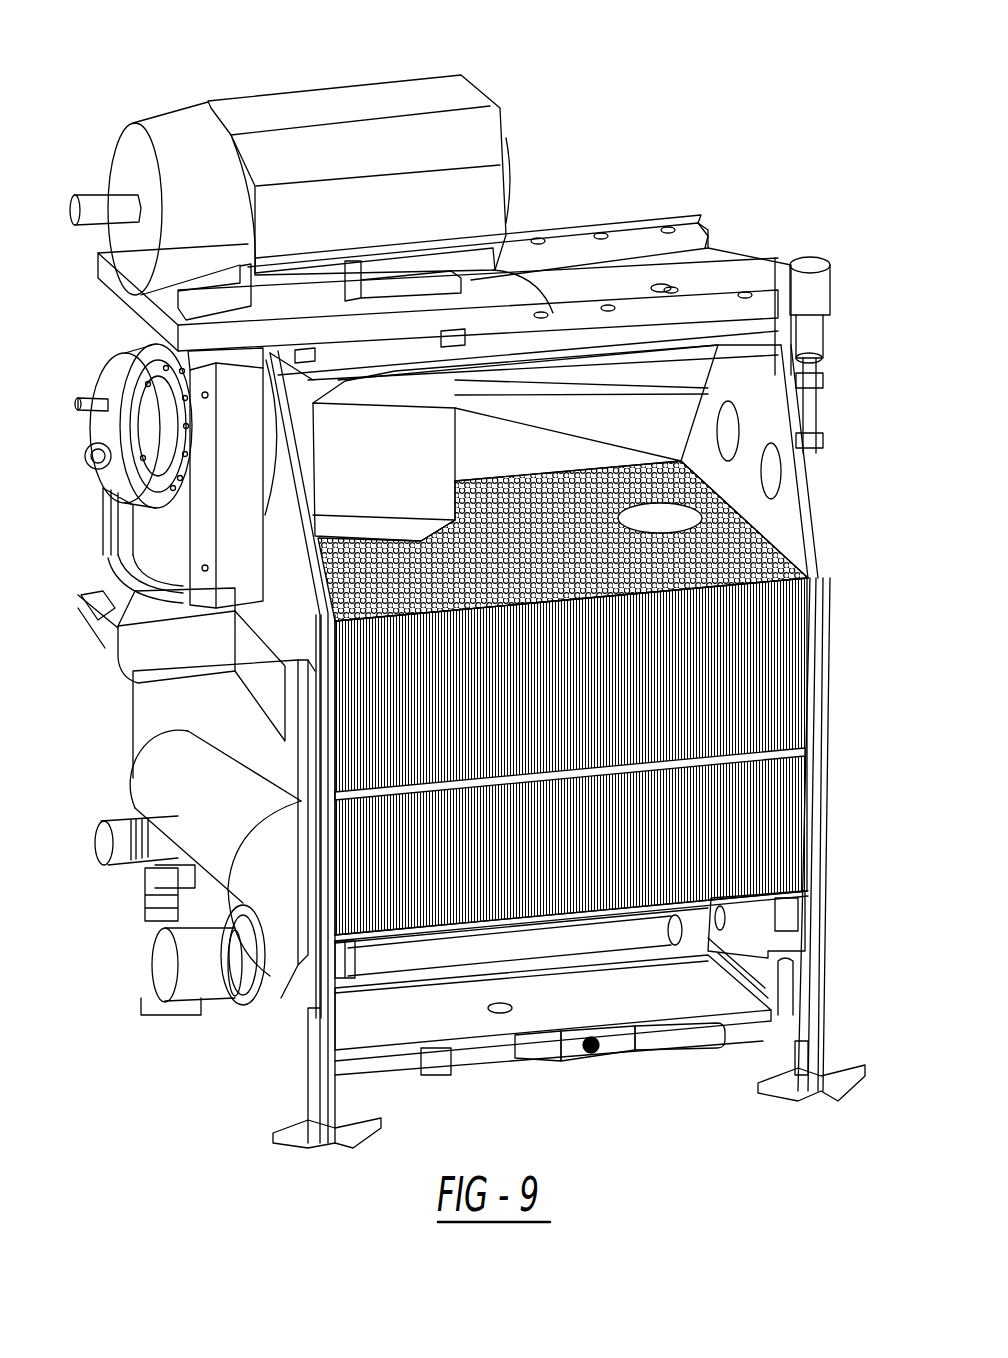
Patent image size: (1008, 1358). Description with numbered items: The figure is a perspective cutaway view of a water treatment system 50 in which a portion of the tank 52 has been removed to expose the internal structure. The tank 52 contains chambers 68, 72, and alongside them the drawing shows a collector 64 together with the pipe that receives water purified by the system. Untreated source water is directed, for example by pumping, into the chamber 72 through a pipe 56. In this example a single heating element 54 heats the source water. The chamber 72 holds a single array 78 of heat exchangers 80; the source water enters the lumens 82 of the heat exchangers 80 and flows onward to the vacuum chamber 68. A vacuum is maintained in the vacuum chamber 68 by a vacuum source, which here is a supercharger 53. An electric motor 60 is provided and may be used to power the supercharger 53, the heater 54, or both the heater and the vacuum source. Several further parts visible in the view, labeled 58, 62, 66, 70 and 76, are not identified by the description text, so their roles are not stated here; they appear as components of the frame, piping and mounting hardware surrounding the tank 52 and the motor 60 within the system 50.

The water treatment system 50 is at (740, 105).
The tank 52 is at (820, 680).
The supercharger 53 is at (97, 497).
The heating element 54 is at (387, 982).
The pipe 56 is at (143, 923).
The mounting bracket 58 is at (103, 563).
The motor 60 is at (347, 82).
The cylinder 62 is at (817, 327).
The collector 64 is at (160, 727).
The hose 66 is at (103, 817).
The vacuum chamber 68 is at (743, 438).
The hopper 70 is at (487, 377).
The chamber 72 is at (790, 817).
The cross member 76 is at (797, 740).
The array 78 is at (793, 780).
The heat exchangers 80 is at (797, 597).
The lumens 82 is at (787, 345).